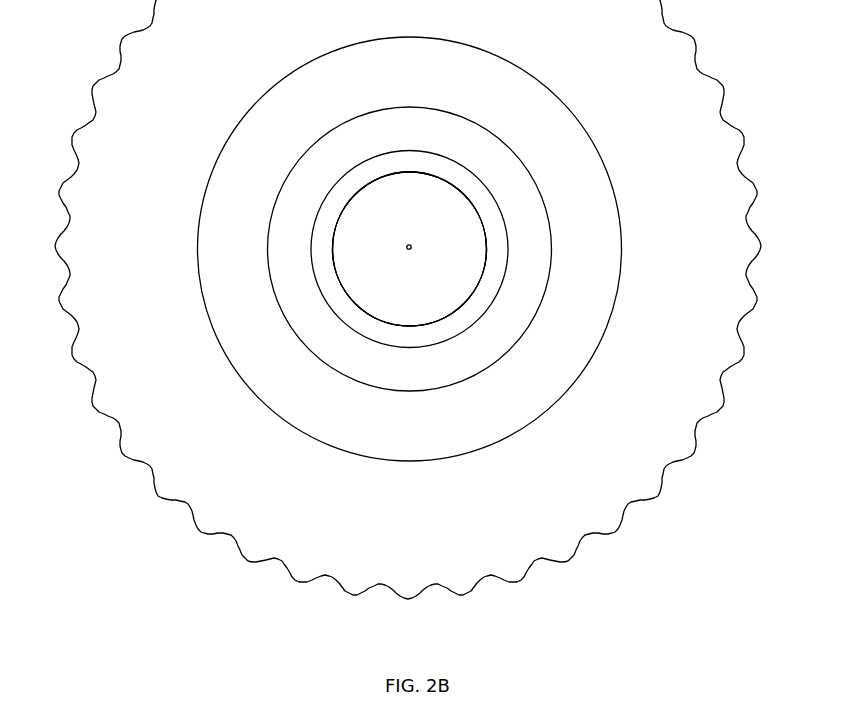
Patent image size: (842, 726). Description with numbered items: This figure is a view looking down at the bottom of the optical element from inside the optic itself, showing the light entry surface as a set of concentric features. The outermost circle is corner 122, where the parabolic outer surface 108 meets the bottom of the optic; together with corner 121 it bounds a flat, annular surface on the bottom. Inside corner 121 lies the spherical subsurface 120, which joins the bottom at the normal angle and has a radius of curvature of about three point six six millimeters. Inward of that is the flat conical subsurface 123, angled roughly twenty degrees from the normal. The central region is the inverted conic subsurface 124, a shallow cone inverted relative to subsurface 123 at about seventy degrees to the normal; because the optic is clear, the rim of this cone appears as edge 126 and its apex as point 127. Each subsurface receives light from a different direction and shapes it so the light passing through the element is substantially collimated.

The parabolic outer surface 108 is at (205, 85).
The spherical subsurface 120 is at (453, 133).
The corner 121 is at (487, 366).
The corner 122 is at (298, 428).
The flat conical subsurface 123 is at (387, 163).
The inverted conic subsurface 124 is at (453, 232).
The edge 126 is at (357, 195).
The point 127 is at (411, 250).